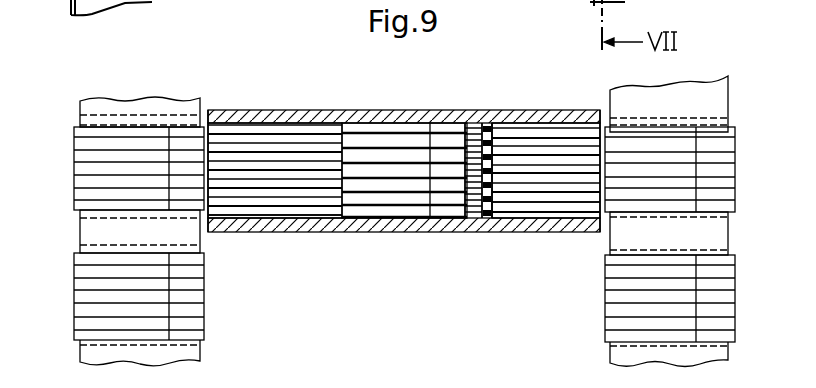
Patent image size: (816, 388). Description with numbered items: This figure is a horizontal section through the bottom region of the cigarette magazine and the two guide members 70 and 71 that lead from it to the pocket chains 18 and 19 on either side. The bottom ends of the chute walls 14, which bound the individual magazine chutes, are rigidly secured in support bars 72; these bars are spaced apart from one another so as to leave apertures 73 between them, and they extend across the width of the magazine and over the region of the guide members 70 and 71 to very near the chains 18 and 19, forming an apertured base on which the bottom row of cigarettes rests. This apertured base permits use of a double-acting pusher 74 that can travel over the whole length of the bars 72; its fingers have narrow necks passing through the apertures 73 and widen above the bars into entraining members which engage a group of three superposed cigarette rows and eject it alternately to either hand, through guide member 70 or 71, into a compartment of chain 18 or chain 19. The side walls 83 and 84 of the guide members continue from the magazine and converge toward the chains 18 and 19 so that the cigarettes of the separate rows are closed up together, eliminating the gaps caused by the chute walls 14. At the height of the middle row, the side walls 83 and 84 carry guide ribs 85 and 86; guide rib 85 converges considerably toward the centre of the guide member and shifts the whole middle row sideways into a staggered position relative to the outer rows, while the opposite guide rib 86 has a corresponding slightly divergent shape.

The chute walls 14 is at (385, 188).
The pocket chain 18 is at (59, 295).
The pocket chain 19 is at (750, 132).
The guide member 70 is at (404, 166).
The guide member 71 is at (521, 105).
The support bars 72 is at (543, 192).
The apertures 73 is at (585, 200).
The double-acting pusher 74 is at (487, 219).
The side wall 83 is at (310, 115).
The side wall 84 is at (298, 232).
The guide rib 85 is at (217, 126).
The guide rib 86 is at (235, 212).